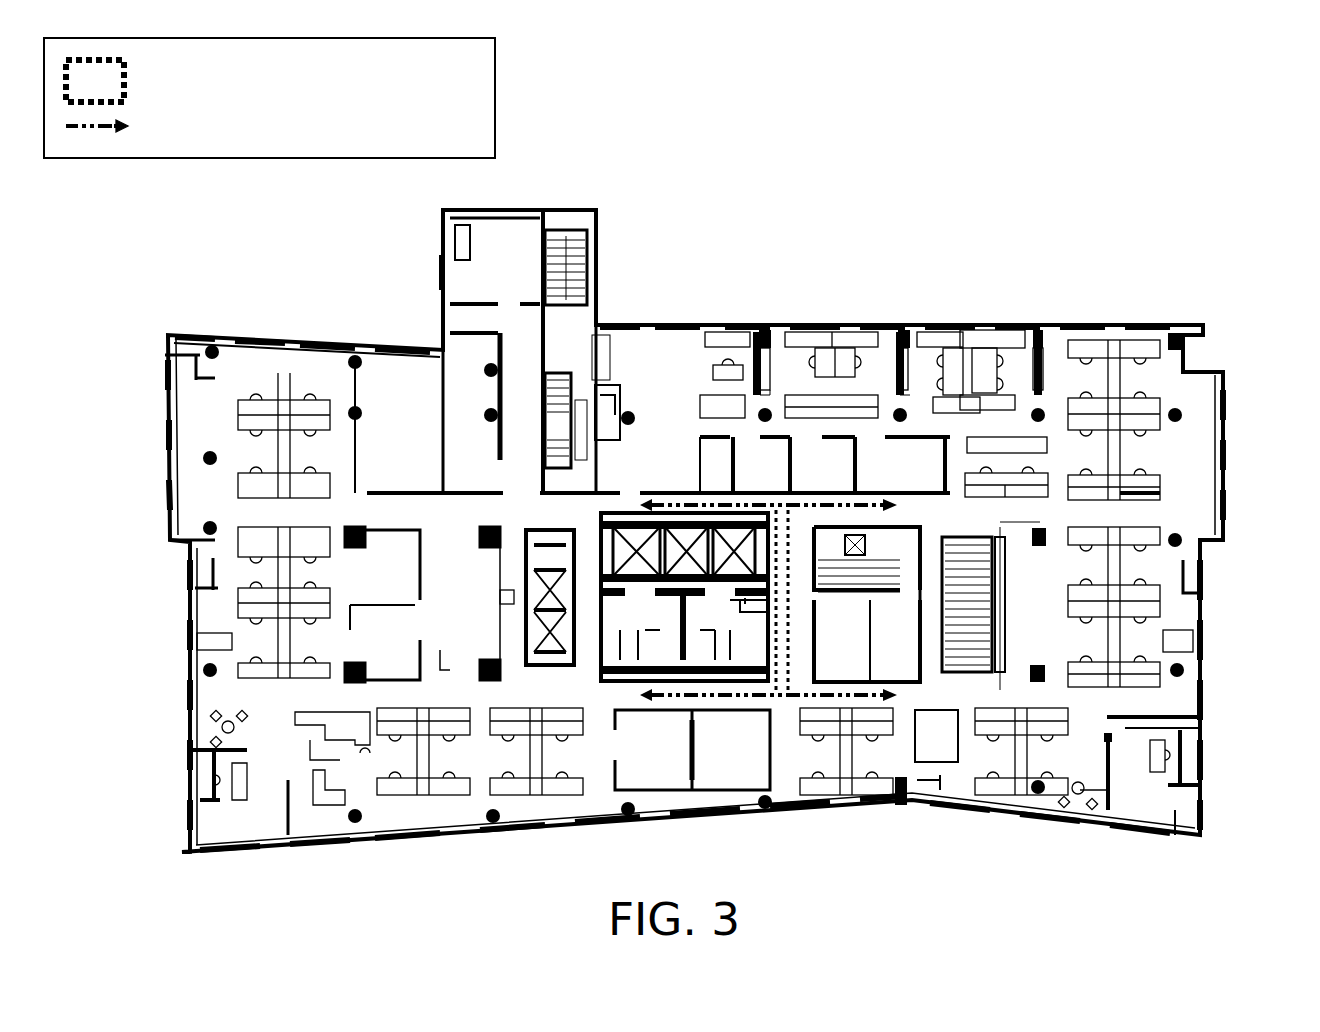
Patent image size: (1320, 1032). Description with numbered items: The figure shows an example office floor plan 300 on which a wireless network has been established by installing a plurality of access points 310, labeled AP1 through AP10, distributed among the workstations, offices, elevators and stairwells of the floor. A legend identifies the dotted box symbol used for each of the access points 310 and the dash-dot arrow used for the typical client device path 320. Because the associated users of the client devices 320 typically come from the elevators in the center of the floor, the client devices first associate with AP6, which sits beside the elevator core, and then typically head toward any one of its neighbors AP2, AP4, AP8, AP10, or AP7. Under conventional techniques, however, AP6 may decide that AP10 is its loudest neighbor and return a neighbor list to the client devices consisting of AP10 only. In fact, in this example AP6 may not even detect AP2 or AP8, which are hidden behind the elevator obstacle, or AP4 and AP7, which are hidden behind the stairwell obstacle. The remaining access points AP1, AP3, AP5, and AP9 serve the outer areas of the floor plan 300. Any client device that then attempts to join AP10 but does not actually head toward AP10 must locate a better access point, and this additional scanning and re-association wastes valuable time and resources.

The office floor plan 300 is at (1199, 80).
The access points 310 is at (228, 81).
The client devices 320 is at (269, 128).
The access point AP1 is at (355, 416).
The access point AP2 is at (670, 439).
The access point AP3 is at (1101, 394).
The access point AP4 is at (961, 518).
The access point AP5 is at (439, 618).
The access point AP6 is at (833, 618).
The access point AP7 is at (1079, 657).
The access point AP8 is at (548, 736).
The access point AP9 is at (269, 755).
The access point AP10 is at (809, 773).